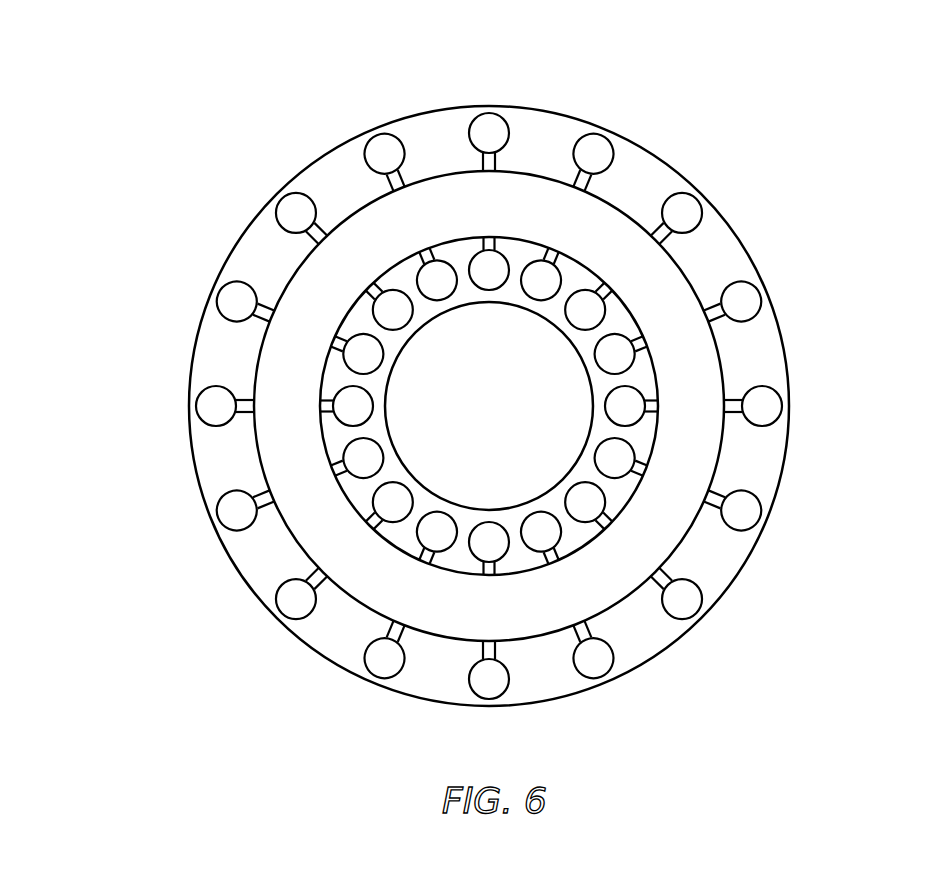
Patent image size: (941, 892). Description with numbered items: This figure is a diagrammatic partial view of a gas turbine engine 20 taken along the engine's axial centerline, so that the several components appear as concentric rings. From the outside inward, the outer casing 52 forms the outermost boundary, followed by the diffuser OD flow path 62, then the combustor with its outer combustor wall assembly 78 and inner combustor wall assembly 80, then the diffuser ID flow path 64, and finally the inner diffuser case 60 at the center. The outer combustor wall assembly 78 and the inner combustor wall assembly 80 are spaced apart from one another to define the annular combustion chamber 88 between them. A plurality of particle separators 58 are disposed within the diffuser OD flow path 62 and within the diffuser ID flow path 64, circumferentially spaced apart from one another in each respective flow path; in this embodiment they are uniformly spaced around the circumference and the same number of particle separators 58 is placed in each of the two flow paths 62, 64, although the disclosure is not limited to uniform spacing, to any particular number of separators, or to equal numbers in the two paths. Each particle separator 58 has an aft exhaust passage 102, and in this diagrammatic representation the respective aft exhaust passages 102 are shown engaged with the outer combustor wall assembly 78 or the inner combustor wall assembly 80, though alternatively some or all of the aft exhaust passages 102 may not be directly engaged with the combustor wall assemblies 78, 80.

The gas turbine engine 20 is at (520, 381).
The outer casing 52 is at (785, 343).
The particle separators 58 is at (451, 294).
The inner diffuser case 60 is at (578, 458).
The diffuser OD flow path 62 is at (549, 406).
The diffuser ID flow path 64 is at (479, 419).
The outer combustor wall assembly 78 is at (723, 450).
The inner combustor wall assembly 80 is at (638, 498).
The combustion chamber 88 is at (505, 215).
The aft exhaust passages 102 is at (417, 258).